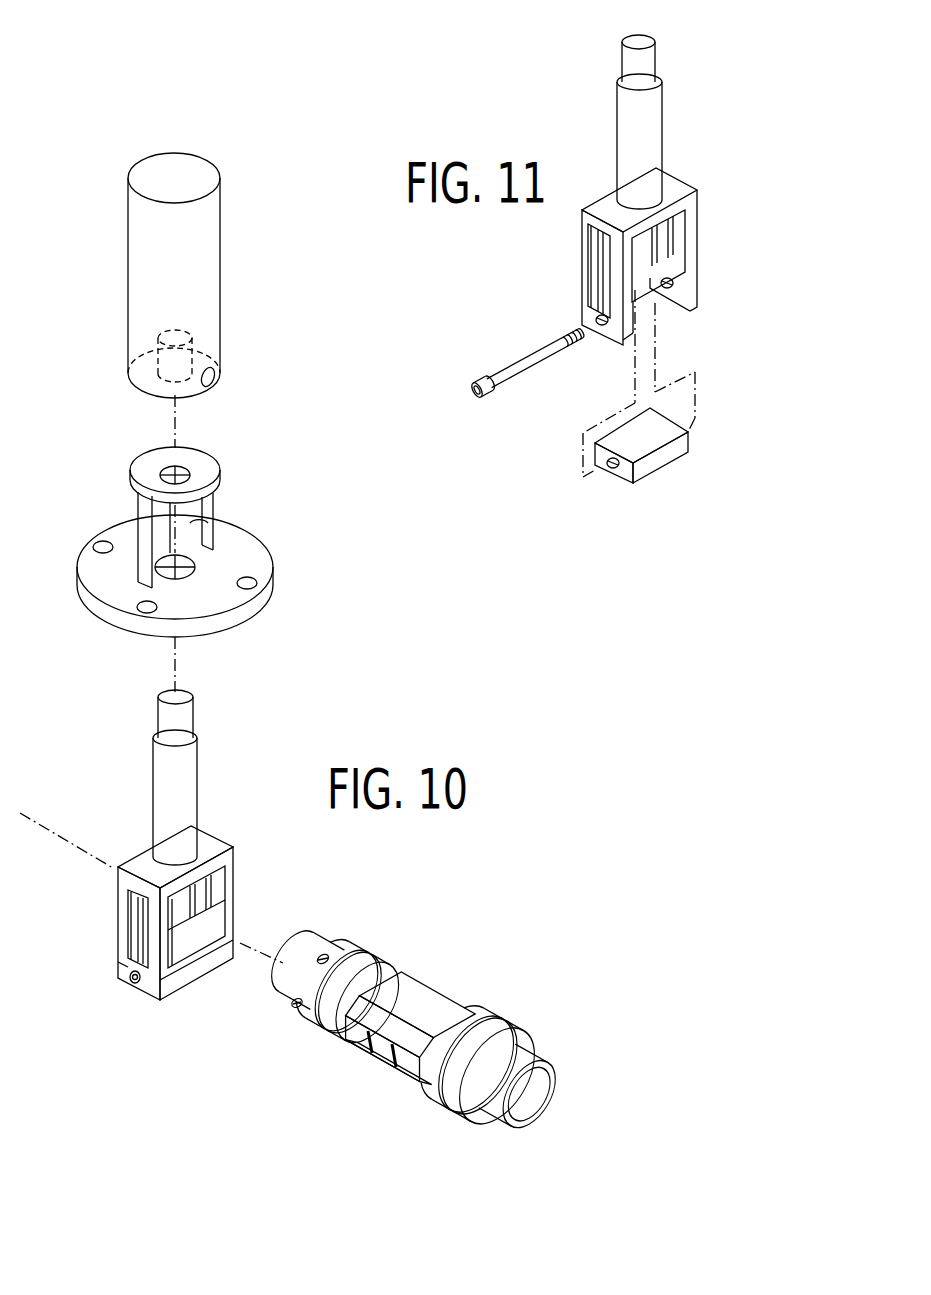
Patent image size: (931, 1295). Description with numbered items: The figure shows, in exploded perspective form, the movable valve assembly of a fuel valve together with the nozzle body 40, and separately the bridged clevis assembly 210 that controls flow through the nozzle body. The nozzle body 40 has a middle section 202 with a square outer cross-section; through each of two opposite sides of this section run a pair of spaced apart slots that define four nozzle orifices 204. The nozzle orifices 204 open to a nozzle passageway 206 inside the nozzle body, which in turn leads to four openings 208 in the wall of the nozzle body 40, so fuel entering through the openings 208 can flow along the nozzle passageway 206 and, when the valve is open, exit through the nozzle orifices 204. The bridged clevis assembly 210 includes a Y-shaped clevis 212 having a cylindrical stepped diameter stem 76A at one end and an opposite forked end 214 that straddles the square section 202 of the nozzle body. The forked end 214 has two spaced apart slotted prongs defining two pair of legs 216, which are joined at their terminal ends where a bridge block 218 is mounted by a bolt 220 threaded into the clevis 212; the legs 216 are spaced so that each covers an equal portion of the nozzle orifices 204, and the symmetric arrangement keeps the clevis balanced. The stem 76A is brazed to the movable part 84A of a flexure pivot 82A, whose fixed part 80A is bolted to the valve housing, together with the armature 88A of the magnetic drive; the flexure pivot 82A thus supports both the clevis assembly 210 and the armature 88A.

In FIG. 10, the armature 88A is at (199, 279).
In FIG. 10, the movable part 84A is at (204, 466).
In FIG. 10, the flexure pivot 82A is at (215, 549).
In FIG. 10, the fixed part 80A is at (227, 627).
In FIG. 10, the stem 76A is at (165, 767).
In FIG. 11, the stem 76A is at (628, 113).
In FIG. 10, the bridged clevis assembly 210 is at (186, 864).
In FIG. 11, the bridged clevis assembly 210 is at (650, 190).
In FIG. 10, the Y-shaped clevis 212 is at (215, 842).
In FIG. 11, the Y-shaped clevis 212 is at (677, 178).
In FIG. 10, the forked end 214 is at (236, 877).
In FIG. 11, the forked end 214 is at (703, 213).
In FIG. 10, the legs 216 is at (188, 897).
In FIG. 11, the legs 216 is at (653, 250).
In FIG. 10, the bridge block 218 is at (188, 975).
In FIG. 11, the bridge block 218 is at (660, 463).
In FIG. 10, the bolt 220 is at (134, 986).
In FIG. 11, the bolt 220 is at (512, 375).
In FIG. 10, the nozzle body 40 is at (430, 1030).
In FIG. 10, the middle section 202 is at (402, 988).
In FIG. 10, the nozzle orifices 204 is at (394, 1070).
In FIG. 10, the nozzle passageway 206 is at (522, 1100).
In FIG. 10, the openings 208 is at (324, 957).